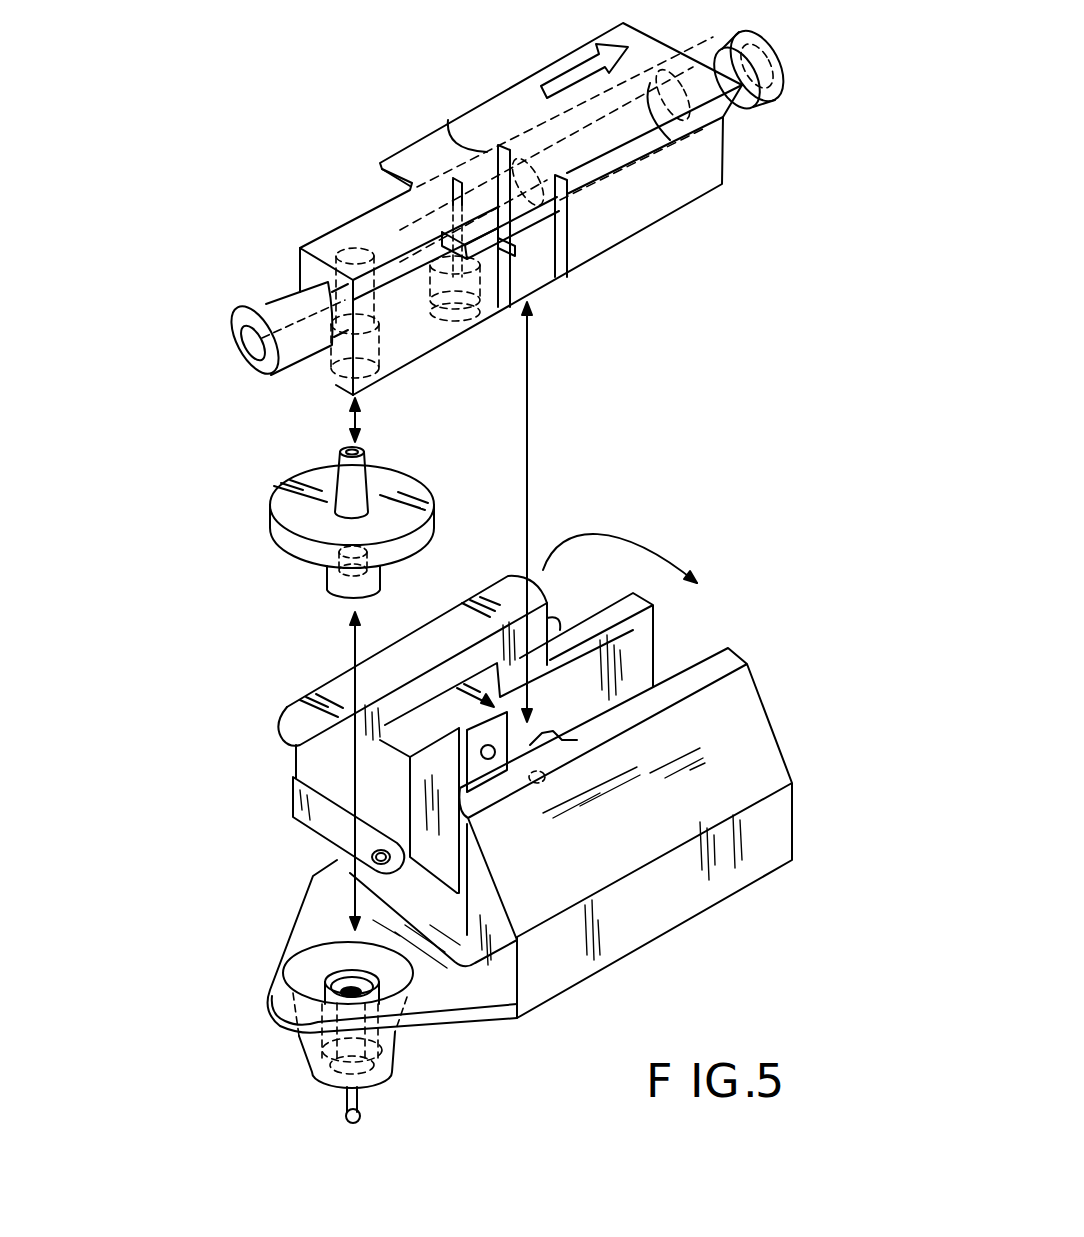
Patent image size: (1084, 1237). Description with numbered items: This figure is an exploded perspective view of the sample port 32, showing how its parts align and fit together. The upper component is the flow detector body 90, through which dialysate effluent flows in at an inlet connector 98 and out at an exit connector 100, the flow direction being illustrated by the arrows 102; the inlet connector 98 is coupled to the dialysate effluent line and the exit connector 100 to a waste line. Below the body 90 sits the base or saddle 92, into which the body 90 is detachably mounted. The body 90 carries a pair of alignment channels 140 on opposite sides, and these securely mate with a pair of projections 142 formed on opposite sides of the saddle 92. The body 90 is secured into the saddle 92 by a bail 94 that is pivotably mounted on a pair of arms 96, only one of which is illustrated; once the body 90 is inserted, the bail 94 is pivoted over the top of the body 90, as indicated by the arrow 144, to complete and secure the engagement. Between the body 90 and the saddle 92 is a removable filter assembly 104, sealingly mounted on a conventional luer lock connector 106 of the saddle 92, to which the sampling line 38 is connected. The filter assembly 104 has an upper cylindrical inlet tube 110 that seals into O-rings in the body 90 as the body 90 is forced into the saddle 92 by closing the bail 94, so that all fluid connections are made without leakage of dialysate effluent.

The sample port 32 is at (663, 478).
The sampling line 38 is at (363, 1117).
The flow detector body 90 is at (645, 207).
The saddle 92 is at (790, 745).
The bail 94 is at (390, 674).
The arms 96 is at (318, 820).
The inlet connector 98 is at (290, 362).
The exit connector 100 is at (767, 93).
The arrows 102 is at (563, 73).
The filter assembly 104 is at (272, 538).
The luer lock connector 106 is at (330, 1088).
The upper cylindrical inlet tube 110 is at (360, 480).
The alignment channels 140 is at (498, 153).
The projections 142 is at (556, 734).
The arrow 144 is at (633, 543).